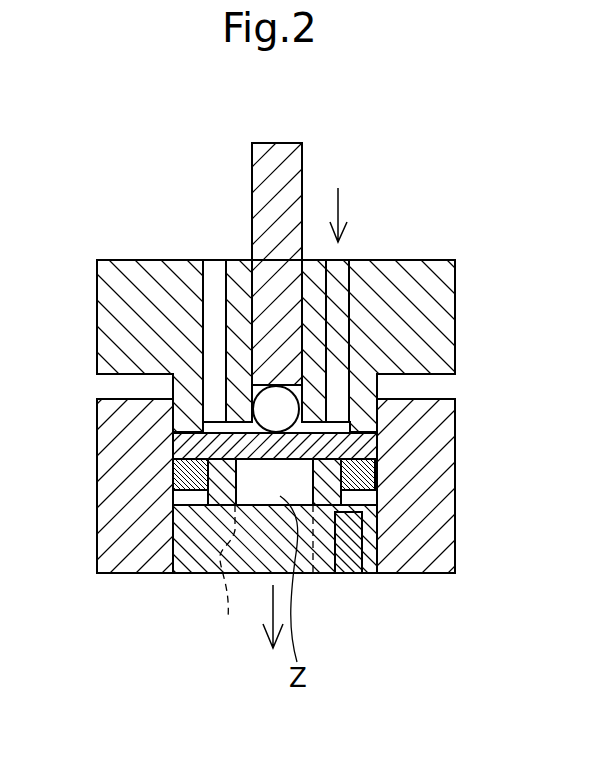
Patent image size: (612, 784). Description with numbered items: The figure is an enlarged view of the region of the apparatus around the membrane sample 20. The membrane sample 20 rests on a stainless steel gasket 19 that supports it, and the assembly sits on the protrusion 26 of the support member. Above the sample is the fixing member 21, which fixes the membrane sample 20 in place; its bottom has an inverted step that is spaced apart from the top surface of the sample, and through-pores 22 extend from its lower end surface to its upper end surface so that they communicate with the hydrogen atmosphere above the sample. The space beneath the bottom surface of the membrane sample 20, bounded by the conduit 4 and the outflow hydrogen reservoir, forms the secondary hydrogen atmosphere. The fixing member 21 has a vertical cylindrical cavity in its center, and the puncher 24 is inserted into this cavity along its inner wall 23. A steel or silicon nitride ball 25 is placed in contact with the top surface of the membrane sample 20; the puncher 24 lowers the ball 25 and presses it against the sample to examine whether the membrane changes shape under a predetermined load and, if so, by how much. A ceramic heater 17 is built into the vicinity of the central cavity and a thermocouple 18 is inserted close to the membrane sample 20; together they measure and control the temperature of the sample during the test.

The conduit 4 is at (225, 576).
The ceramic heater 17 is at (184, 573).
The thermocouple 18 is at (348, 572).
The gasket 19 is at (178, 484).
The membrane sample 20 is at (173, 445).
The fixing member 21 is at (110, 333).
The through-pore 22 is at (213, 261).
The inner wall 23 is at (262, 293).
The puncher 24 is at (252, 176).
The steel or silicon nitride ball 25 is at (284, 403).
The protrusion of support member 26 is at (445, 453).